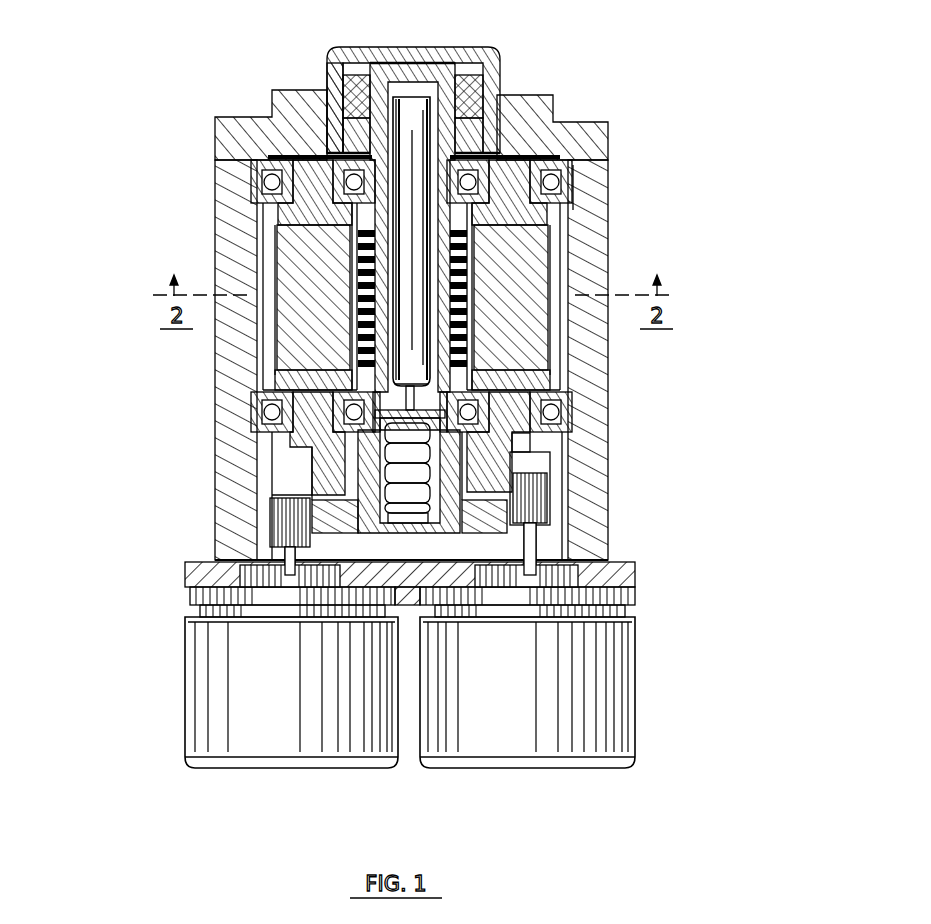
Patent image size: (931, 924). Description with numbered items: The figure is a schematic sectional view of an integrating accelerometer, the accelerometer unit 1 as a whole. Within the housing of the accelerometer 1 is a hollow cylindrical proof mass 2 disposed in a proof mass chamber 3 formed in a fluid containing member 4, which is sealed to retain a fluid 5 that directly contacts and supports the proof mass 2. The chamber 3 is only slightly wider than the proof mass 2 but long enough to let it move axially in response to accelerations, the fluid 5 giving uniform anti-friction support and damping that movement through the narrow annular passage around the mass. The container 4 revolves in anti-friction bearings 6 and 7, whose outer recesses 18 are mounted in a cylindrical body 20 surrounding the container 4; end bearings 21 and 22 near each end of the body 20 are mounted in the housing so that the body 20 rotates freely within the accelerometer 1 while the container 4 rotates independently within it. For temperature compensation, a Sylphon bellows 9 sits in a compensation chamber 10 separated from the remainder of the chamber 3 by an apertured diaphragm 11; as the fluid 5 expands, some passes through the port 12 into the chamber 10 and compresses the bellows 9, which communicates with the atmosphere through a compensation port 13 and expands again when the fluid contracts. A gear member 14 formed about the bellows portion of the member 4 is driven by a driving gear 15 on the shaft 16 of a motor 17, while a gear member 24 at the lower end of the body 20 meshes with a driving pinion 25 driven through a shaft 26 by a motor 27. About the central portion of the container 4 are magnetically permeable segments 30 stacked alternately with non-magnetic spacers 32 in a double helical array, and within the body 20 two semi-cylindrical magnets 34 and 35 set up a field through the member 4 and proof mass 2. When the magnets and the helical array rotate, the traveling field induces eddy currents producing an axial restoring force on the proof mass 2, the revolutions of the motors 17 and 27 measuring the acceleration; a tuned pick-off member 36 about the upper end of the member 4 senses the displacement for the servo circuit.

The accelerometer unit 1 is at (614, 257).
The proof mass 2 is at (413, 100).
The proof mass chamber 3 is at (412, 83).
The fluid containing member 4 is at (437, 80).
The fluid 5 is at (337, 100).
The anti-friction bearing 6 is at (466, 179).
The anti-friction bearing 7 is at (476, 408).
The Sylphon bellows 9 is at (428, 506).
The compensation chamber 10 is at (346, 528).
The apertured diaphragm 11 is at (398, 399).
The port 12 is at (410, 388).
The compensation port 13 is at (400, 540).
The gear member 14 is at (480, 528).
The driving gear 15 is at (297, 498).
The shaft 16 is at (297, 555).
The motor 17 is at (268, 738).
The outer recess 18 is at (345, 181).
The cylindrical body 20 is at (510, 170).
The end bearing 21 is at (573, 205).
The end bearing 22 is at (563, 400).
The gear member 24 is at (318, 483).
The driving pinion 25 is at (532, 500).
The shaft 26 is at (538, 546).
The motor 27 is at (490, 740).
The magnetically permeable segments 30 is at (470, 302).
The non-magnetic spacers 32 is at (468, 326).
The tubular magnet 34 is at (513, 296).
The tubular magnet 35 is at (310, 296).
The tuned pick-off member 36 is at (477, 87).